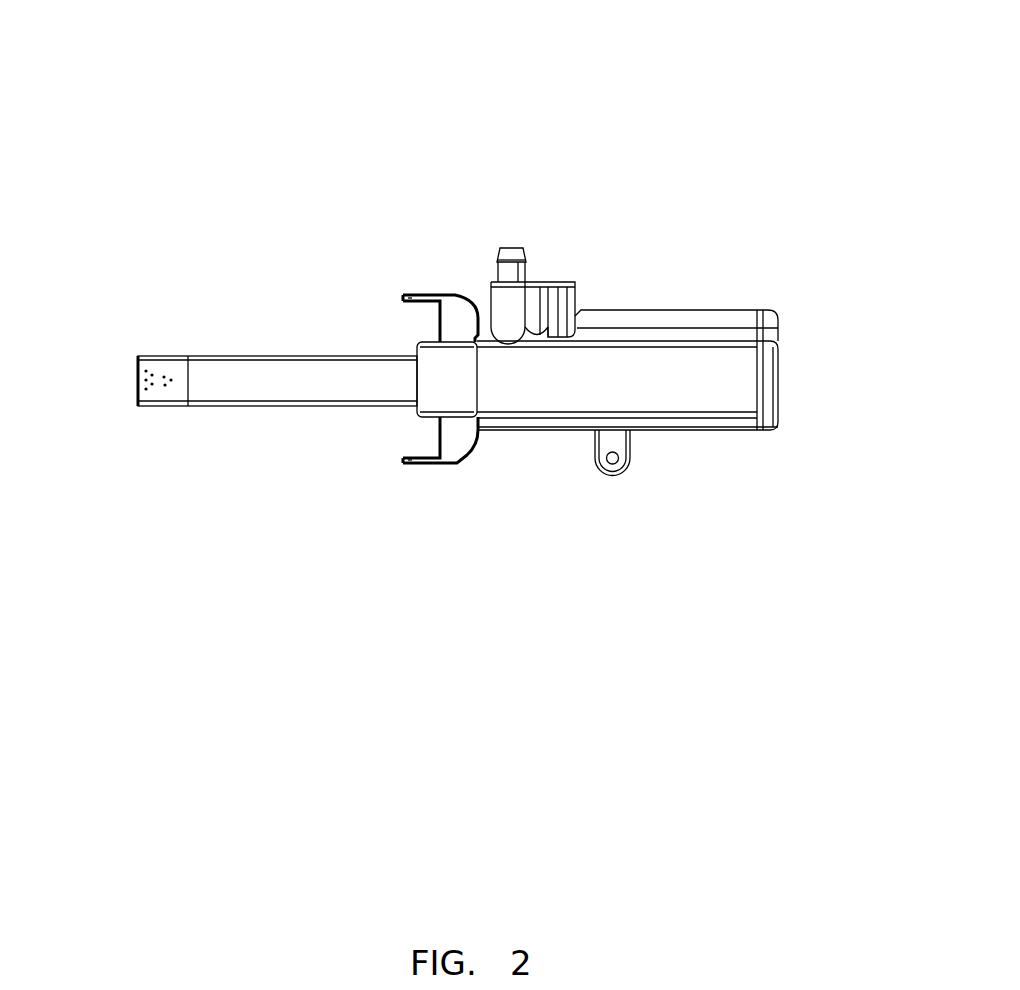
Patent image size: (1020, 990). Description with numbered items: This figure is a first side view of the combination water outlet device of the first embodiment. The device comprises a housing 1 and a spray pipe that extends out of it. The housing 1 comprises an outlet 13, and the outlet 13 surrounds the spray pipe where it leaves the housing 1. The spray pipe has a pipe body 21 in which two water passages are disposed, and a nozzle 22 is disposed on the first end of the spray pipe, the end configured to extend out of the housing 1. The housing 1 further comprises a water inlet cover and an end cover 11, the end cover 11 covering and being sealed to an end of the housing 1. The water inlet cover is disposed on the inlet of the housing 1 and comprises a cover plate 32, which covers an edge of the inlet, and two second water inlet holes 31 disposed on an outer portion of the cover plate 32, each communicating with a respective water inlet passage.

The housing 1 is at (610, 380).
The end cover 11 is at (767, 317).
The outlet 13 is at (447, 390).
The pipe body 21 is at (288, 387).
The nozzle 22 is at (157, 390).
The second water inlet holes 31 is at (510, 263).
The cover plate 32 is at (543, 282).